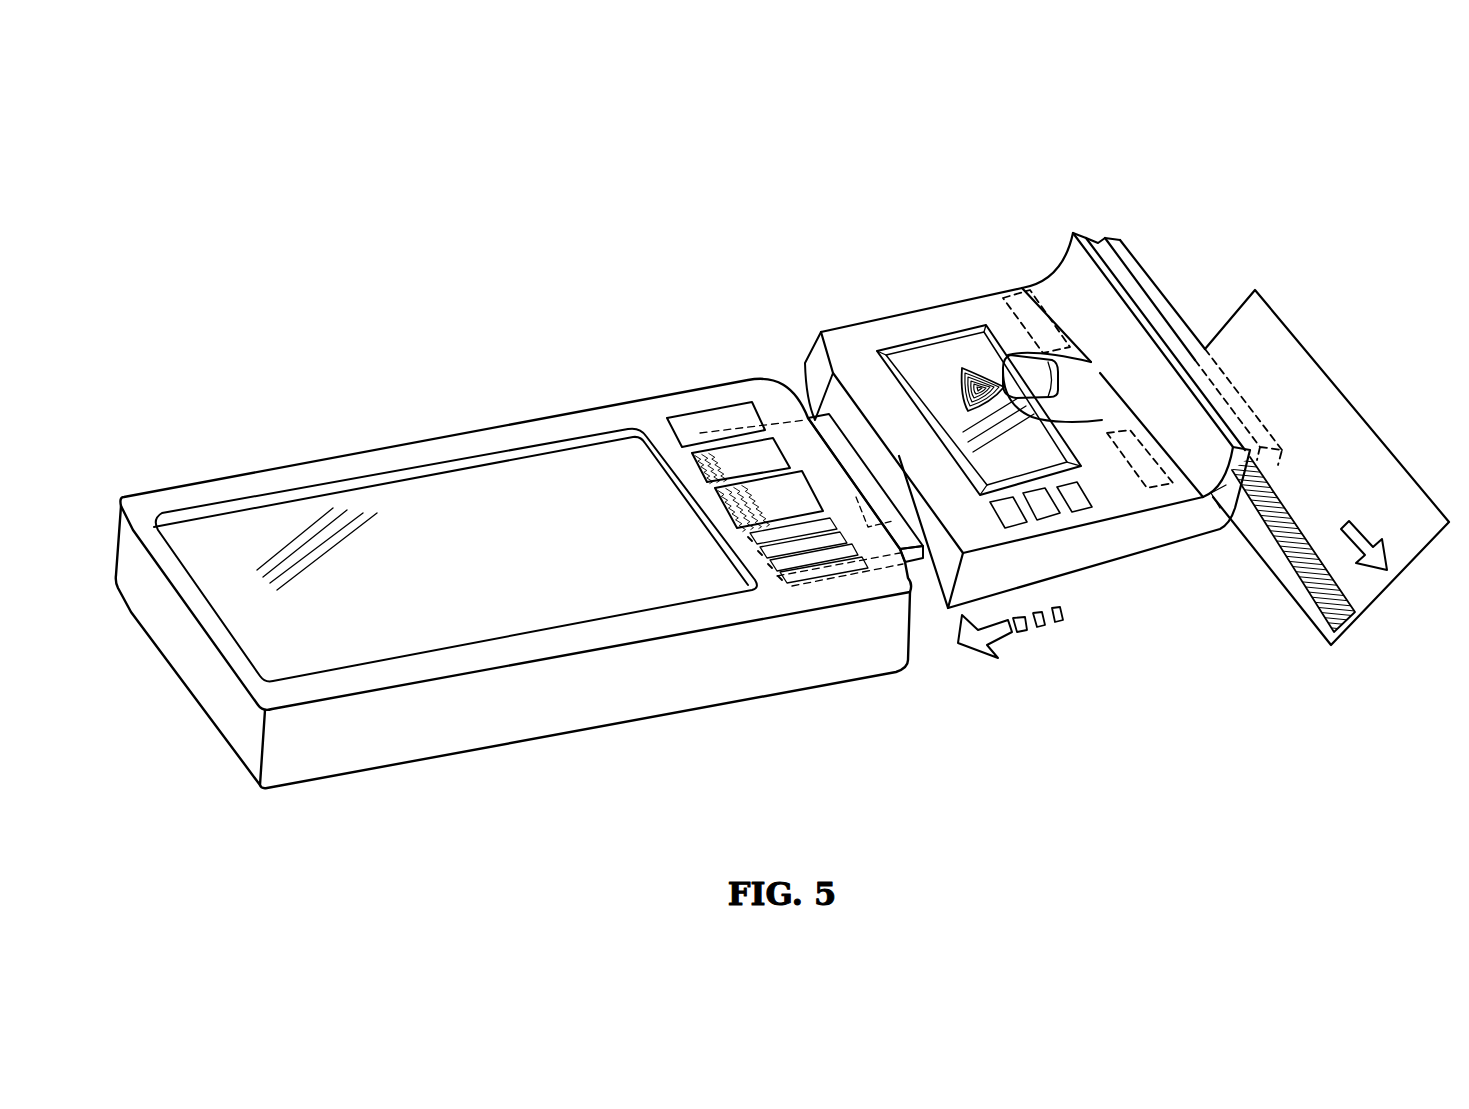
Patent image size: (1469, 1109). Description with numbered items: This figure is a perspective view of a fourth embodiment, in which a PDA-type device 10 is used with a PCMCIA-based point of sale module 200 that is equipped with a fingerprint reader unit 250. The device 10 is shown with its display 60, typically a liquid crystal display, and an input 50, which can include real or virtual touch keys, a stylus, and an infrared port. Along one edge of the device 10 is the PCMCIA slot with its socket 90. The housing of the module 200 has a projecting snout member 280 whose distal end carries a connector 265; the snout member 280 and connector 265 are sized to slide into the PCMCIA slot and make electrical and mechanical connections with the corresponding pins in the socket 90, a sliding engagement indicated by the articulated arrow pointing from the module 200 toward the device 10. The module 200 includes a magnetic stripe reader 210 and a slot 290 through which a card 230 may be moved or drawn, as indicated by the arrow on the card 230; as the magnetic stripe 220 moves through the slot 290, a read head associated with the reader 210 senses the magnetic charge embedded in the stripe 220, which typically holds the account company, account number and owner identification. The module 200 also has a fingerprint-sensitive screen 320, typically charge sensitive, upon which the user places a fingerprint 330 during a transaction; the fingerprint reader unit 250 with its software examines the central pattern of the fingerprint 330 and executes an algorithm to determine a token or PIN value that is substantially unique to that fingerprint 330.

The device 10 is at (306, 364).
The display 60 is at (264, 516).
The input 50 is at (680, 338).
The socket 90 is at (690, 455).
The connector 265 is at (760, 556).
The snout member 280 is at (812, 418).
The module 200 is at (921, 232).
The fingerprint reader unit 250 is at (1020, 293).
The magnetic stripe reader 210 is at (1155, 456).
The fingerprint-sensitive screen 320 is at (957, 418).
The fingerprint 330 is at (965, 392).
The slot 290 is at (1098, 230).
The card 230 is at (1393, 433).
The magnetic stripe 220 is at (1348, 611).